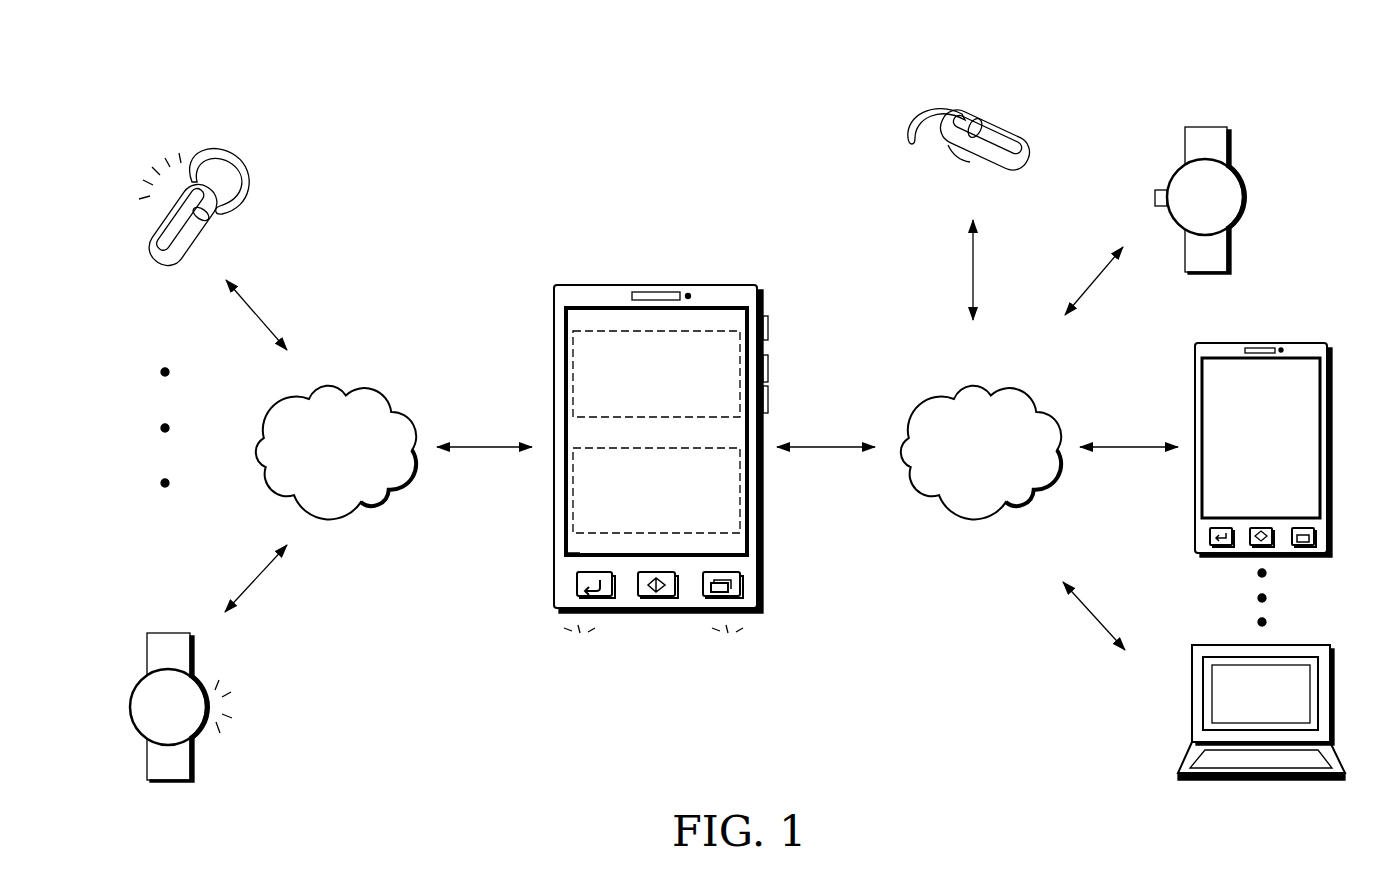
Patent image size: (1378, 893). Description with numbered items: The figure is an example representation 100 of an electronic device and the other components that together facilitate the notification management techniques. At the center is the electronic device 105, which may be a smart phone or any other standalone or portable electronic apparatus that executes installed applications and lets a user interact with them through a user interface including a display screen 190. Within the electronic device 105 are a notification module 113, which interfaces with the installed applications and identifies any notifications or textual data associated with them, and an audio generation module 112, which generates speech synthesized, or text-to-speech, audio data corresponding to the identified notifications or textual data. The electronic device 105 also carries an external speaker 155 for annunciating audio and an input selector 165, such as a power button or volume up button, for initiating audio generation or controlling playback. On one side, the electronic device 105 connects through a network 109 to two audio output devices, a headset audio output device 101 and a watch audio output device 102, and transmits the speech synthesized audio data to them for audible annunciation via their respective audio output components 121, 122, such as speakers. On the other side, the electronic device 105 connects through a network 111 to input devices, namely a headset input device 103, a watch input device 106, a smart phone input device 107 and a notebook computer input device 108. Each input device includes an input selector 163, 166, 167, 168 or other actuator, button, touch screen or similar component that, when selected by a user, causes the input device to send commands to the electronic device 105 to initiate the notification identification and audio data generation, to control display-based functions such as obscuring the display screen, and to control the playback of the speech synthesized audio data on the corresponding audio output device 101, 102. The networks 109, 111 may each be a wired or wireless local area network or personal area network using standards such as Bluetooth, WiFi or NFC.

The representation 100 is at (140, 70).
The audio output device 101 is at (202, 152).
The audio output component 121 is at (172, 212).
The audio output device 102 is at (162, 633).
The audio output component 122 is at (228, 704).
The electronic device 105 is at (568, 286).
The network 109 is at (276, 400).
The audio generation module 112 is at (572, 376).
The notification module 113 is at (572, 488).
The display screen 190 is at (574, 545).
The external speaker 155 is at (730, 636).
The input selector 165 is at (769, 329).
The input device 103 is at (917, 104).
The input selector 163 is at (984, 124).
The input device 106 is at (1200, 127).
The input selector 166 is at (1158, 190).
The network 111 is at (924, 398).
The input device 107 is at (1213, 343).
The input selector 167 is at (1222, 384).
The input device 108 is at (1200, 647).
The input selector 168 is at (1200, 757).